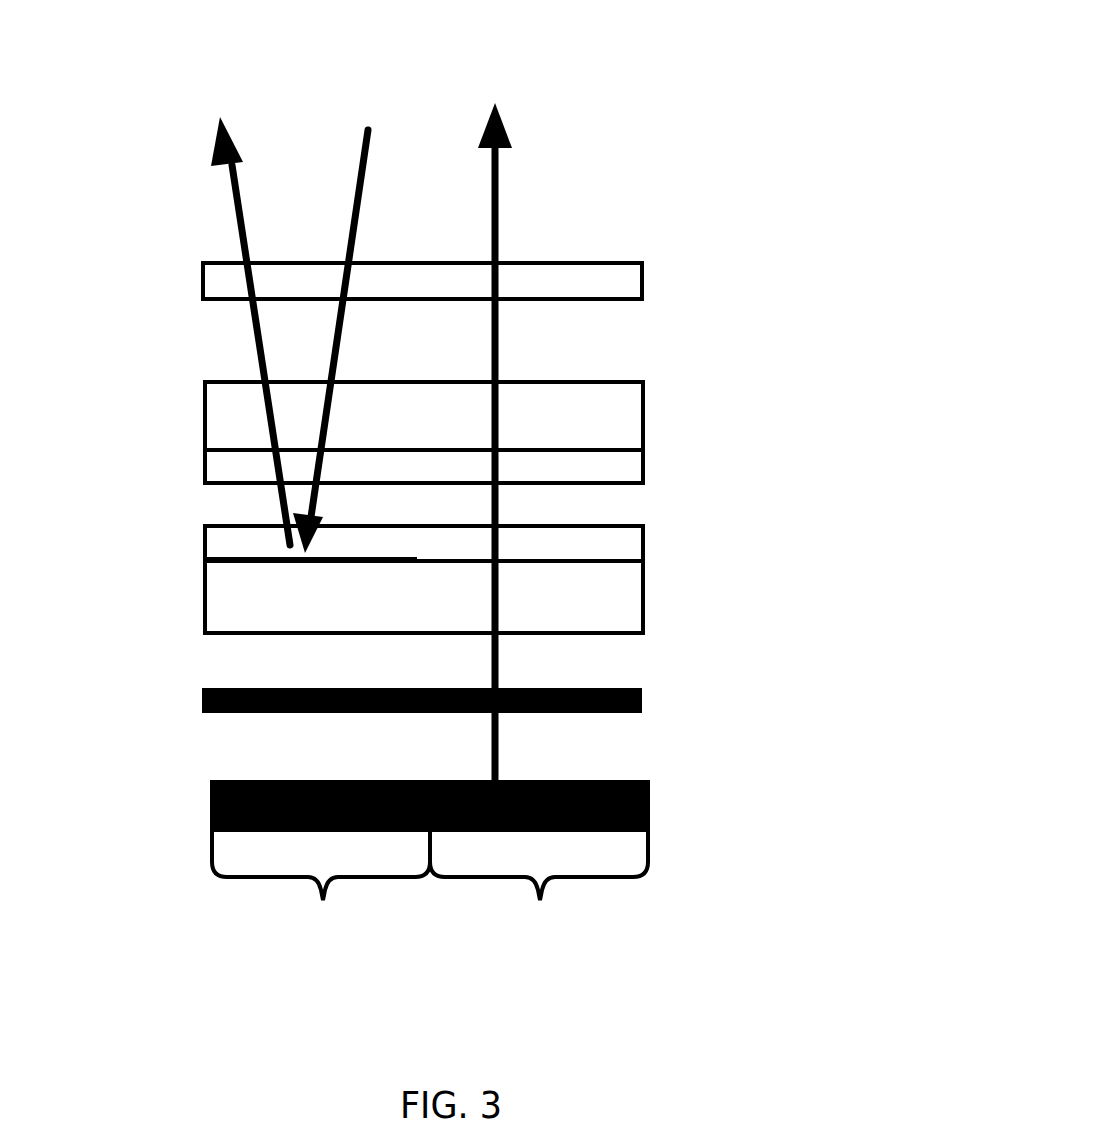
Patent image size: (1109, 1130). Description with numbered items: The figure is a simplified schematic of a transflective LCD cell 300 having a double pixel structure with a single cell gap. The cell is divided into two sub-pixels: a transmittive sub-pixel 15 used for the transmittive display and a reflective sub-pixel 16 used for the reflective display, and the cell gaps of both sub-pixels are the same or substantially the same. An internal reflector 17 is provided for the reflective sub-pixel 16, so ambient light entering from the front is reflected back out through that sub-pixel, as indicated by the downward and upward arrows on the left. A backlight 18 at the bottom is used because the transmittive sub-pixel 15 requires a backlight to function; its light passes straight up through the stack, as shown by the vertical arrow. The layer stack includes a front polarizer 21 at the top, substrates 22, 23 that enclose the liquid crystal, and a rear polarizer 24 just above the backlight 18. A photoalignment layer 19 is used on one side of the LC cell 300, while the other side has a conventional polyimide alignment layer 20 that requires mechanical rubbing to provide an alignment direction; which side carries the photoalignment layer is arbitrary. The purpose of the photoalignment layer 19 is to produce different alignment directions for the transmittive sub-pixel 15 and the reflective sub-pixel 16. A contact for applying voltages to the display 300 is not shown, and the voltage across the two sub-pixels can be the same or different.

The transflective LCD cell 300 is at (858, 121).
The front polarizer 21 is at (643, 270).
The substrate 22 is at (623, 393).
The polyimide alignment layer 20 is at (627, 465).
The photoalignment layer 19 is at (647, 538).
The substrate 23 is at (618, 612).
The internal reflector 17 is at (213, 557).
The rear polarizer 24 is at (645, 690).
The backlight 18 is at (652, 783).
The reflective sub-pixel 16 is at (321, 890).
The transmittive sub-pixel 15 is at (539, 890).